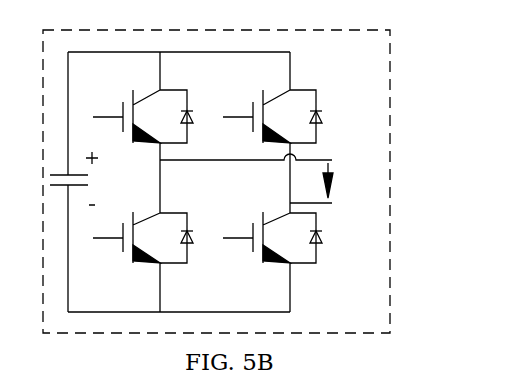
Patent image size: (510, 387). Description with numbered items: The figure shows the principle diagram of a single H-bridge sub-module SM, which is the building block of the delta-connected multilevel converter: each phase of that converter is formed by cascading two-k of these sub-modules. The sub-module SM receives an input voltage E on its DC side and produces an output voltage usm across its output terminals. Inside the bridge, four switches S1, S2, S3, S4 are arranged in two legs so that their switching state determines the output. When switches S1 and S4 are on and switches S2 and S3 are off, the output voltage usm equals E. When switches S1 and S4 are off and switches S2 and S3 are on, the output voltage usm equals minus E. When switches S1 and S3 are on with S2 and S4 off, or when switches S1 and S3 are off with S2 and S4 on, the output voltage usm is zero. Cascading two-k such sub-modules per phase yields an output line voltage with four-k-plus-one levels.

The H-bridge sub-module SM is at (216, 181).
The input voltage E is at (85, 178).
The switch S1 is at (143, 106).
The switch S2 is at (143, 236).
The switch S3 is at (272, 132).
The switch S4 is at (272, 262).
The output voltage usm is at (270, 178).